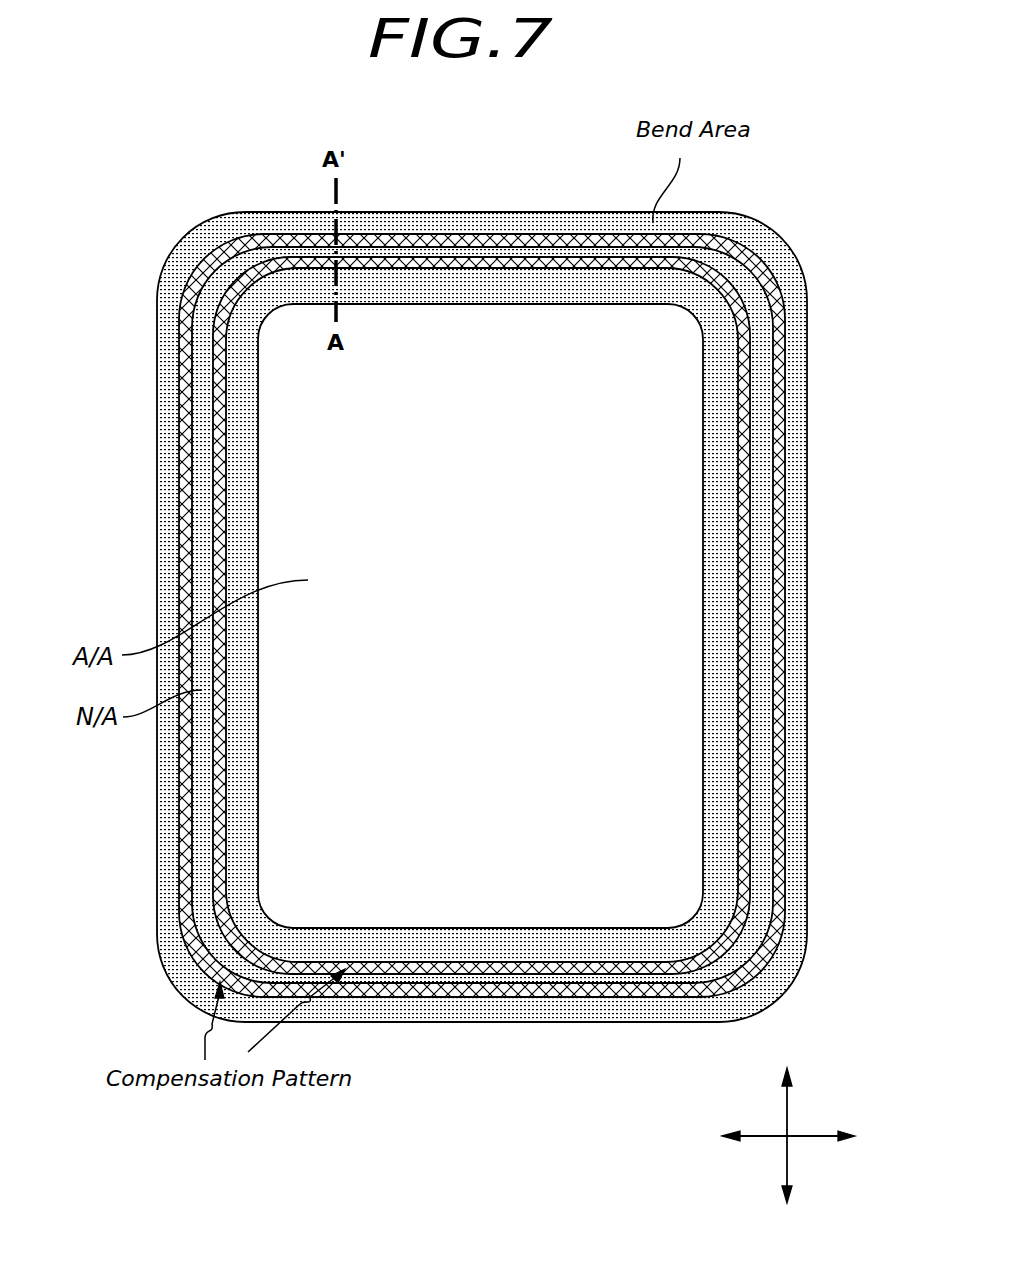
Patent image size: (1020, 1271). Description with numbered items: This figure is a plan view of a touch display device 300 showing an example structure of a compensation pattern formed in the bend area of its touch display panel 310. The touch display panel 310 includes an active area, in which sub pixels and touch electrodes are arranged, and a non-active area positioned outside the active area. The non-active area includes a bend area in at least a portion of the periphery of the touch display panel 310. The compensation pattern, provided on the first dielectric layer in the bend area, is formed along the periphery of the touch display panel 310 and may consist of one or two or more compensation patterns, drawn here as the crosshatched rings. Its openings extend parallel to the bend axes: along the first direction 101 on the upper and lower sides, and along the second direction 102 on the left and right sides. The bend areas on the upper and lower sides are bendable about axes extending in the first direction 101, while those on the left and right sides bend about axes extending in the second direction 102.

The touch display device 300 is at (156, 137).
The touch display panel 310 is at (157, 328).
The first direction 101 is at (823, 1138).
The second direction 102 is at (788, 1099).